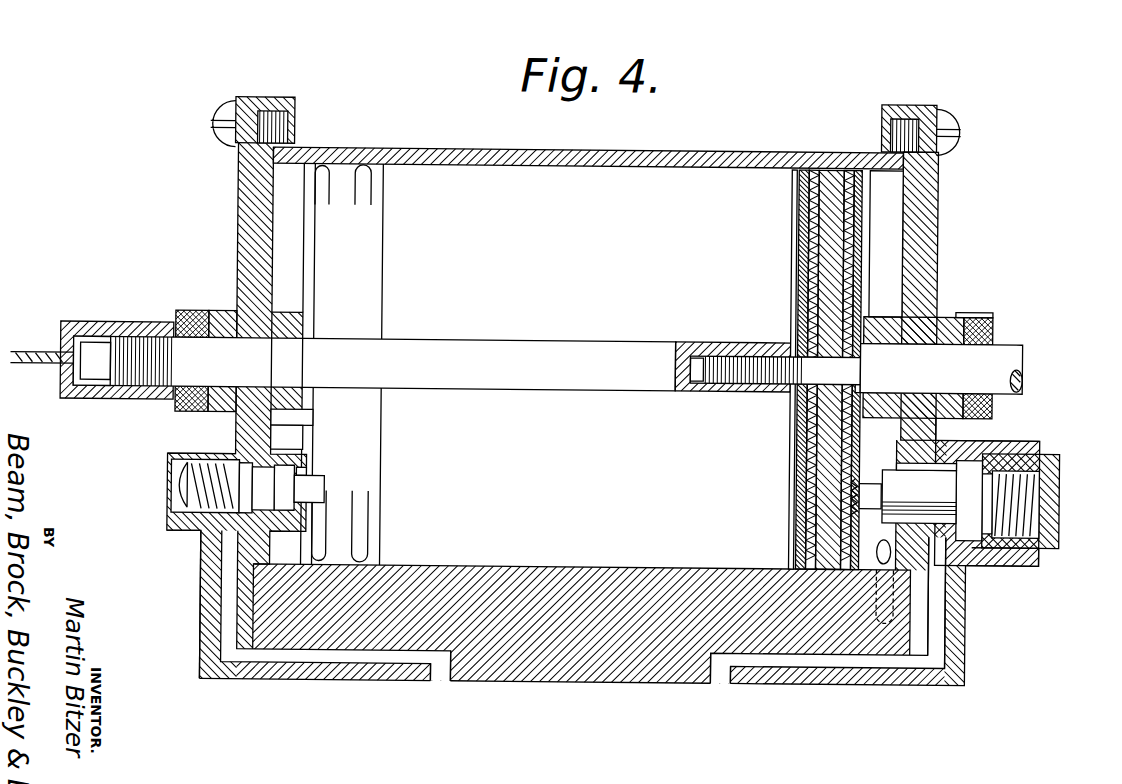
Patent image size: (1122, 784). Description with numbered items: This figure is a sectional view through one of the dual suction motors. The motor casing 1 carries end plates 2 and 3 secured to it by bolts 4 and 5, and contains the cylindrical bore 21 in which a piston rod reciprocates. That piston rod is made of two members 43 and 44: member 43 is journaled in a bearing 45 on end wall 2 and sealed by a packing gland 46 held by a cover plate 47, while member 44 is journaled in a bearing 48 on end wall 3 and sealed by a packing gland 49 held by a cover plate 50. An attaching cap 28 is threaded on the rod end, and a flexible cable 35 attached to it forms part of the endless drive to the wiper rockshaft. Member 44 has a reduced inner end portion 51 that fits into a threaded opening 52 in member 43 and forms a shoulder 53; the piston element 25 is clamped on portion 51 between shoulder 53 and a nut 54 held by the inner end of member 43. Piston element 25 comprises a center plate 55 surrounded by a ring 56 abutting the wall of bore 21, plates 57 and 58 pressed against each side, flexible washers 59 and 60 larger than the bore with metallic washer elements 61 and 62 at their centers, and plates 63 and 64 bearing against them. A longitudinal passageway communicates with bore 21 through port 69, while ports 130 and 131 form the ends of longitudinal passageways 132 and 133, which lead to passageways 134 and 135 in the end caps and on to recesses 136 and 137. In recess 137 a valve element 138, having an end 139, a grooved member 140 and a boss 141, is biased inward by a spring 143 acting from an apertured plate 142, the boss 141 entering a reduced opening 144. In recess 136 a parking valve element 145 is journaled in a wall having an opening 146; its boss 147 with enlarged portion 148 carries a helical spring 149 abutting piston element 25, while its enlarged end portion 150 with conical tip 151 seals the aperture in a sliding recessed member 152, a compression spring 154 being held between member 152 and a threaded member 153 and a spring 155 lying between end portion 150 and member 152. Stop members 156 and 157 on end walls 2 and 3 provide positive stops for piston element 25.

The motor casing 1 is at (605, 683).
The end plate 2 is at (936, 183).
The end plate 3 is at (236, 183).
The bolt 4 is at (945, 112).
The bolt 5 is at (232, 110).
The cylindrical bore 21 is at (556, 208).
The piston element 25 is at (780, 261).
The attaching cap 28 is at (85, 326).
The flexible cable 35 is at (35, 357).
The piston rod member 43 is at (530, 341).
The piston rod member 44 is at (1022, 345).
The bearing 45 is at (300, 315).
The packing gland 46 is at (195, 314).
The cover plate 47 is at (182, 314).
The bearing 48 is at (940, 314).
The packing gland 49 is at (1000, 310).
The cover plate 50 is at (985, 312).
The inner end portion of reduced diameter 51 is at (797, 392).
The threaded opening 52 is at (722, 343).
The shoulder 53 is at (860, 388).
The nut 54 is at (790, 352).
The center plate 55 is at (808, 223).
The ring 56 is at (828, 168).
The plate 57 is at (800, 190).
The plate 58 is at (843, 208).
The flexible washer 59 is at (815, 515).
The flexible washer 60 is at (853, 230).
The metallic washer element 61 is at (792, 412).
The metallic washer element 62 is at (868, 456).
The plate 63 is at (810, 474).
The plate 64 is at (870, 254).
The port 69 is at (890, 552).
The port 130 is at (710, 683).
The port 131 is at (450, 682).
The longitudinal passageway 132 is at (845, 680).
The longitudinal passageway 133 is at (355, 680).
The passageway 134 is at (950, 650).
The passageway 135 is at (218, 614).
The recess 136 is at (972, 558).
The recess 137 is at (187, 534).
The valve element 138 is at (246, 482).
The end of valve element 139 is at (258, 480).
The grooved member 140 is at (300, 455).
The boss 141 is at (330, 488).
The apertured plate 142 is at (172, 472).
The spring 143 is at (185, 500).
The opening of reduced diameter 144 is at (312, 480).
The parking valve element 145 is at (905, 480).
The opening 146 is at (932, 470).
The boss 147 is at (852, 512).
The enlarged portion 148 is at (858, 488).
The helical spring 149 is at (845, 546).
The enlarged end portion 150 is at (965, 465).
The conical tip 151 is at (955, 505).
The recessed member 152 is at (1005, 548).
The recessed member 153 is at (1060, 490).
The compression spring 154 is at (1035, 518).
The spring 155 is at (992, 470).
The stop member 156 is at (775, 370).
The stop member 157 is at (313, 420).